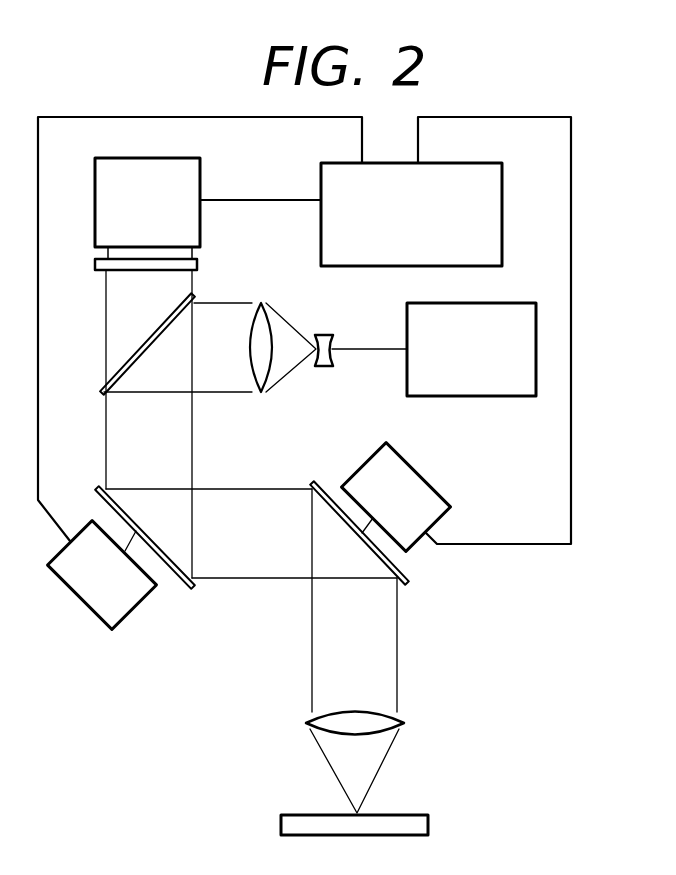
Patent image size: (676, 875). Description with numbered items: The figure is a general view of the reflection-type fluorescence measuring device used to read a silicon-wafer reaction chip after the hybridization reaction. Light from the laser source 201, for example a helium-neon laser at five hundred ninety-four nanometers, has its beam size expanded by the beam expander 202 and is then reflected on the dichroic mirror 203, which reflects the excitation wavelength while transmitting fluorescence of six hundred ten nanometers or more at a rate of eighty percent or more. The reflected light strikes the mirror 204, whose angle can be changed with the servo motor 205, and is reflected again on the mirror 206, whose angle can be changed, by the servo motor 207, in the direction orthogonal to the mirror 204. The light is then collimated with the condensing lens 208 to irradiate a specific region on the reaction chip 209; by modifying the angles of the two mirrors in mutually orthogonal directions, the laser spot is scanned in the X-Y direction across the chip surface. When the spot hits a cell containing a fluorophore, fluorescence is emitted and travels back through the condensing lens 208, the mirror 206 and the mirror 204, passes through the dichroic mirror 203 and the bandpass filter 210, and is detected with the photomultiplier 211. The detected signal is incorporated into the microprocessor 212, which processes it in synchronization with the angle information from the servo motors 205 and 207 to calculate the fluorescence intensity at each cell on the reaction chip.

The laser source 201 is at (513, 396).
The beam expander 202 is at (347, 362).
The dichroic mirror 203 is at (101, 395).
The mirror 204 is at (196, 590).
The servo motor 205 is at (133, 617).
The mirror 206 is at (409, 585).
The servo motor 207 is at (418, 540).
The condensing lens 208 is at (306, 724).
The reaction chip 209 is at (428, 823).
The bandpass filter 210 is at (197, 265).
The photomultiplier 211 is at (200, 168).
The microprocessor 212 is at (504, 189).